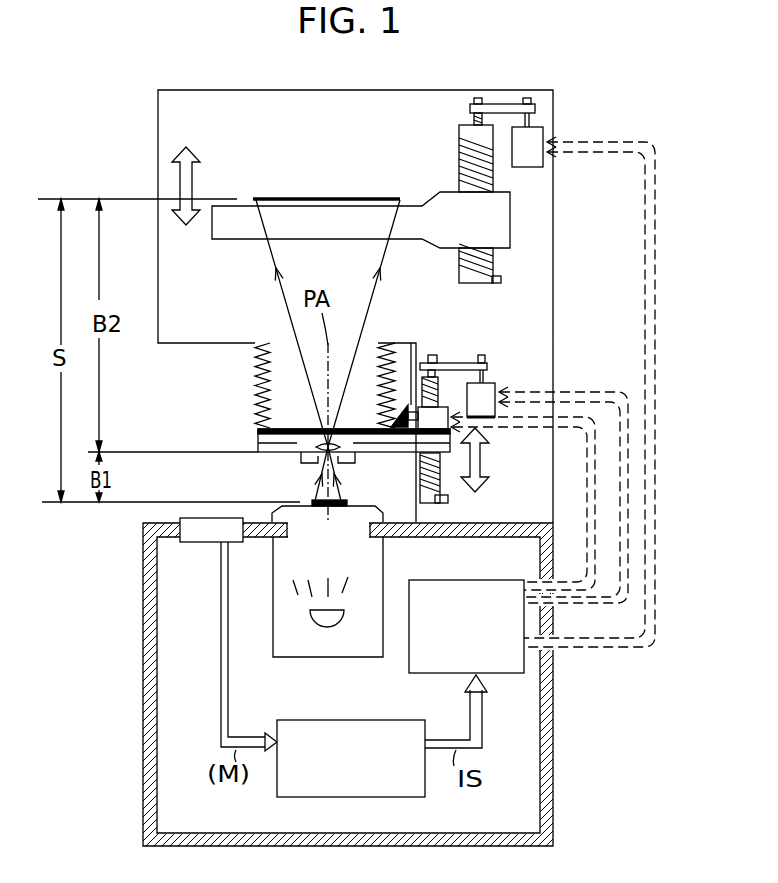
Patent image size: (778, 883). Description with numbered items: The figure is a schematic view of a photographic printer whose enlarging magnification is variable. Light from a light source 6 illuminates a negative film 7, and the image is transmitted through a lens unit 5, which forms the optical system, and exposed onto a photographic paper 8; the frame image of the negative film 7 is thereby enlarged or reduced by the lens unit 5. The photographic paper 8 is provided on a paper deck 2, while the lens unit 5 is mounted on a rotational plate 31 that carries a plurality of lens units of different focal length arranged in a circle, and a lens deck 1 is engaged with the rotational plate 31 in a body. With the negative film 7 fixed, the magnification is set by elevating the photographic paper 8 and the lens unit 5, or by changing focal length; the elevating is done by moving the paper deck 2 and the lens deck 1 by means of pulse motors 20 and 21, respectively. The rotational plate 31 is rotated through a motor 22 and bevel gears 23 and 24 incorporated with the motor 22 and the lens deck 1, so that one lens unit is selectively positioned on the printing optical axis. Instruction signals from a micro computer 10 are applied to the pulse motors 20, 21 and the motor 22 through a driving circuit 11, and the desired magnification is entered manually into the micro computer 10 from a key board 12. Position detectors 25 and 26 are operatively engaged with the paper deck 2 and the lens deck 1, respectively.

The lens deck 1 is at (260, 437).
The paper deck 2 is at (233, 238).
The lens unit 5 is at (337, 440).
The light source 6 is at (314, 614).
The negative film 7 is at (322, 498).
The photographic paper 8 is at (313, 199).
The micro computer 10 is at (358, 798).
The driving circuit 11 is at (497, 675).
The key board 12 is at (180, 545).
The pulse motor 20 is at (543, 126).
The pulse motor 21 is at (497, 385).
The motor 22 is at (442, 405).
The bevel gear 23 is at (398, 413).
The bevel gear 24 is at (404, 406).
The position detector 25 is at (501, 280).
The position detector 26 is at (450, 500).
The rotational plate 31 is at (410, 447).